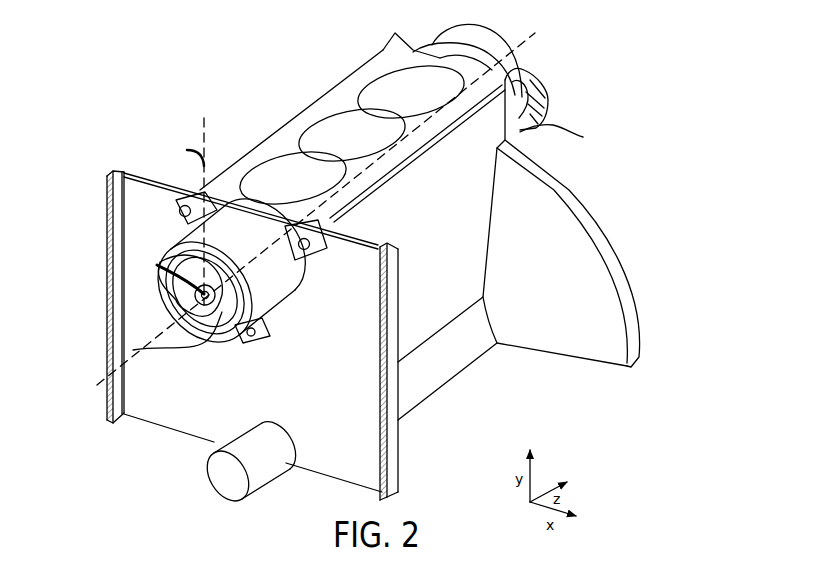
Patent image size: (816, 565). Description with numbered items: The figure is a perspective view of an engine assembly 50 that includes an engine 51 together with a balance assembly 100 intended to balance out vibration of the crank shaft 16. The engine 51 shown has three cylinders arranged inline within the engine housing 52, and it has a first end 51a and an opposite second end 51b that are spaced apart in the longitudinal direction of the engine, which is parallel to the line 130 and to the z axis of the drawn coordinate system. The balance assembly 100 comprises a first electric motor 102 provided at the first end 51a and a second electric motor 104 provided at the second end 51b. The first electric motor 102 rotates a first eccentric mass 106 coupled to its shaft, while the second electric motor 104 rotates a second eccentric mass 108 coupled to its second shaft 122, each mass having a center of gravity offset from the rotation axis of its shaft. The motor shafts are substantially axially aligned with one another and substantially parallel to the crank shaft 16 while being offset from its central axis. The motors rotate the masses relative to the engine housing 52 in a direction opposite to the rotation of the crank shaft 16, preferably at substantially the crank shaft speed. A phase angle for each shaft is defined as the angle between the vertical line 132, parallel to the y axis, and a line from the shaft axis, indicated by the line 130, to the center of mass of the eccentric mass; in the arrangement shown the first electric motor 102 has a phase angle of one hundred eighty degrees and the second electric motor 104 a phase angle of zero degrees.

The crank shaft 16 is at (211, 477).
The engine assembly 50 is at (383, 115).
The engine 51 is at (248, 145).
The first end of the engine 51a is at (583, 137).
The second end of the engine 51b is at (152, 302).
The engine housing 52 is at (332, 92).
The balance assembly 100 is at (367, 274).
The first electric motor 102 is at (443, 43).
The second electric motor 104 is at (178, 299).
The first eccentric mass 106 is at (544, 80).
The second eccentric mass 108 is at (183, 257).
The second shaft 122 is at (158, 266).
The line 130 is at (536, 32).
The line 132 is at (178, 156).